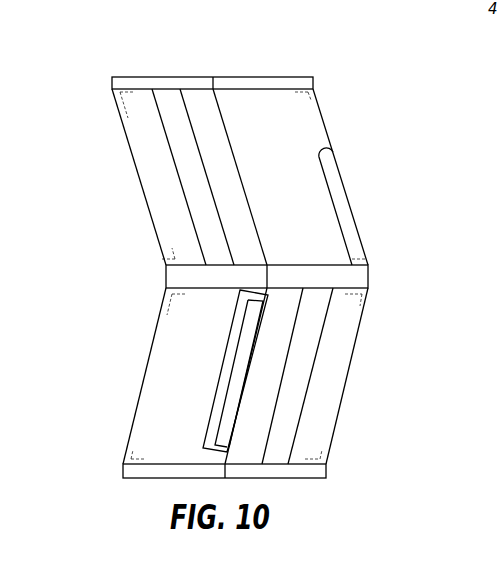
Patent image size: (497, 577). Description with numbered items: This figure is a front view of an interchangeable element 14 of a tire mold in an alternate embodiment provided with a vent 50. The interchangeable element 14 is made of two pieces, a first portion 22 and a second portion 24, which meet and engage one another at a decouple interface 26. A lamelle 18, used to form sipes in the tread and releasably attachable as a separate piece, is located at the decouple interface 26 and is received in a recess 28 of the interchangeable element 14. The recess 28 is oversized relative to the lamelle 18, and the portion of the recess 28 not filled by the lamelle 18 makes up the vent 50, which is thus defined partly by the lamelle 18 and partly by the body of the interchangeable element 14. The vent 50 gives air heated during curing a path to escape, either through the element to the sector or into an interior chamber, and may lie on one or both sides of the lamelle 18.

The interchangeable element 14 is at (312, 108).
The second portion 24 is at (136, 122).
The decouple interface 26 is at (258, 232).
The first portion 22 is at (333, 164).
The recess 28 is at (232, 322).
The vent 50 is at (217, 387).
The lamelle 18 is at (218, 418).